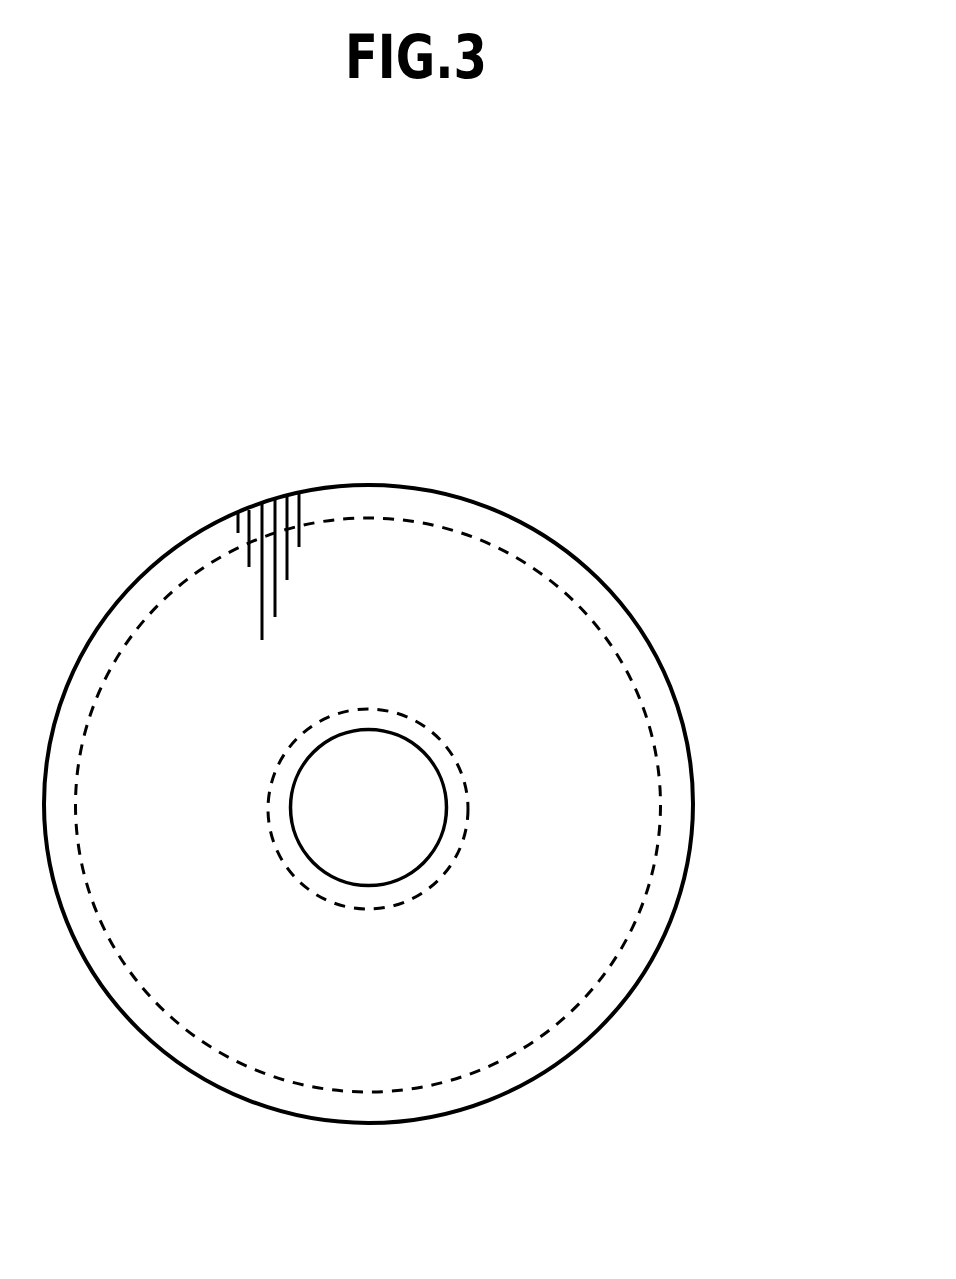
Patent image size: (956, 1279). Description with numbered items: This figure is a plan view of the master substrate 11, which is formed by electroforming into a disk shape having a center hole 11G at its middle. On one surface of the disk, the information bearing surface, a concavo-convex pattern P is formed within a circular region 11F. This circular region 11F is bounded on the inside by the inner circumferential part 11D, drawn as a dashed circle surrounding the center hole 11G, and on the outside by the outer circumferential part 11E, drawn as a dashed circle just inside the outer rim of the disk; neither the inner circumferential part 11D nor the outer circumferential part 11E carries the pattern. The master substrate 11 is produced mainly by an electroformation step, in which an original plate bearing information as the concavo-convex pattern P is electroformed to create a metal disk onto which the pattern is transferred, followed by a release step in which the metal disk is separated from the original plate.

The master substrate 11 is at (612, 587).
The outer circumferential part 11E is at (662, 713).
The inner circumferential part 11D is at (435, 753).
The center hole 11G is at (323, 853).
The concavo-convex pattern P is at (567, 800).
The circular region 11F is at (513, 1005).